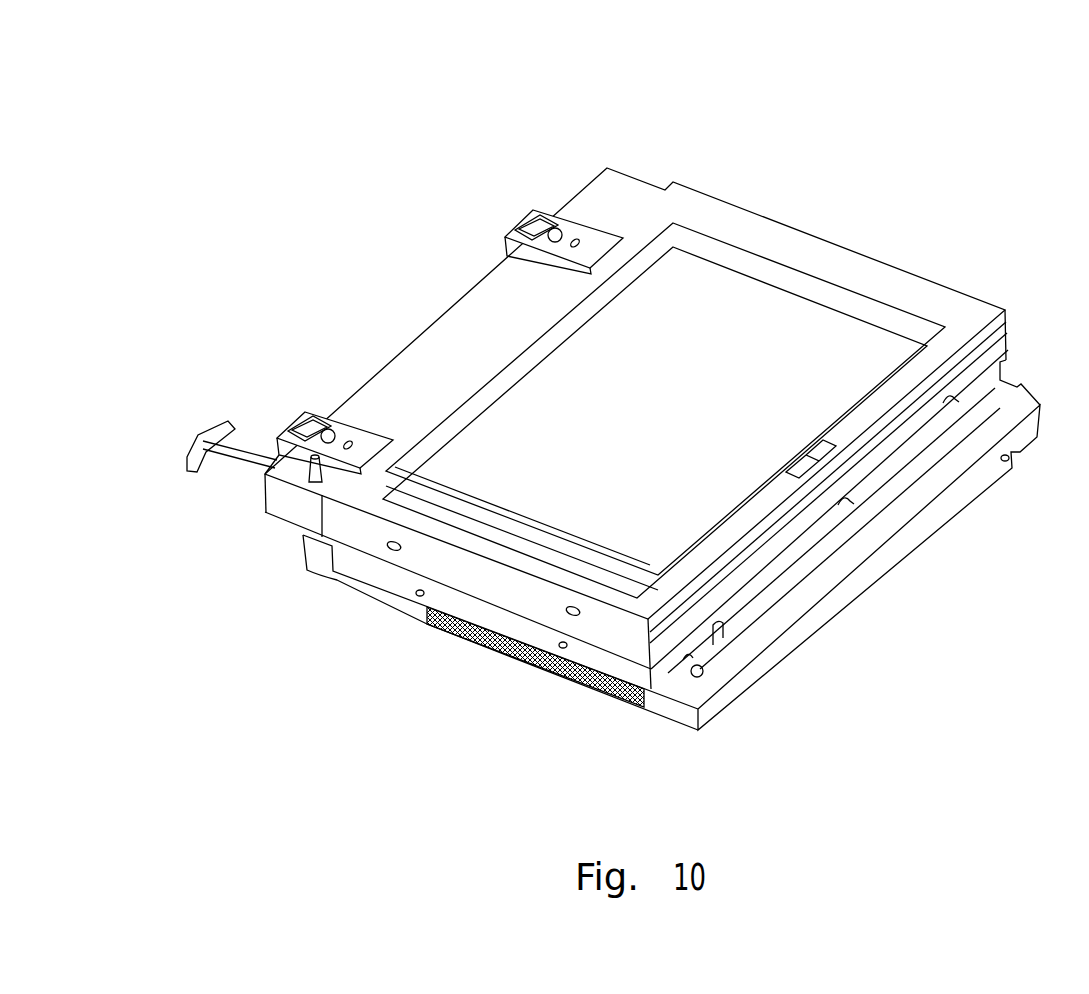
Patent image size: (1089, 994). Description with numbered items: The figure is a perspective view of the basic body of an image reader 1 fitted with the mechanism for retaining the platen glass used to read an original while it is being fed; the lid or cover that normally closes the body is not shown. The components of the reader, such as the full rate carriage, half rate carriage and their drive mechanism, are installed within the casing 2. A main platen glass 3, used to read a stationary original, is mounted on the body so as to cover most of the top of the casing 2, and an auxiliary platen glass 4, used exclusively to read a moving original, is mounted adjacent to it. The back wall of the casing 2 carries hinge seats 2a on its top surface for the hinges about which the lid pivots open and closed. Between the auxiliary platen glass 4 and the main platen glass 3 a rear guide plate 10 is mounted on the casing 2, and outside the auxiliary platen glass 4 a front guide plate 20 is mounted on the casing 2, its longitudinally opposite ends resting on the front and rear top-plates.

The image reader 1 is at (742, 205).
The casing 2 is at (1003, 378).
The hinge seats 2a is at (570, 233).
The main platen glass 3 is at (757, 310).
The auxiliary platen glass 4 is at (535, 537).
The rear guide plate 10 is at (468, 520).
The front guide plate 20 is at (428, 607).